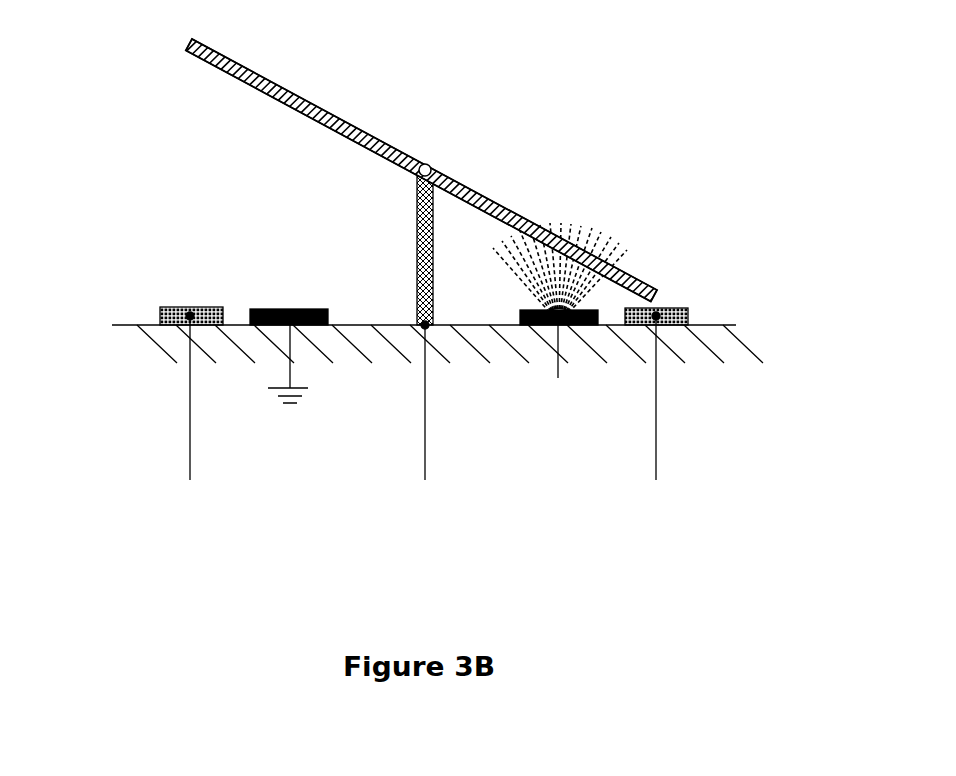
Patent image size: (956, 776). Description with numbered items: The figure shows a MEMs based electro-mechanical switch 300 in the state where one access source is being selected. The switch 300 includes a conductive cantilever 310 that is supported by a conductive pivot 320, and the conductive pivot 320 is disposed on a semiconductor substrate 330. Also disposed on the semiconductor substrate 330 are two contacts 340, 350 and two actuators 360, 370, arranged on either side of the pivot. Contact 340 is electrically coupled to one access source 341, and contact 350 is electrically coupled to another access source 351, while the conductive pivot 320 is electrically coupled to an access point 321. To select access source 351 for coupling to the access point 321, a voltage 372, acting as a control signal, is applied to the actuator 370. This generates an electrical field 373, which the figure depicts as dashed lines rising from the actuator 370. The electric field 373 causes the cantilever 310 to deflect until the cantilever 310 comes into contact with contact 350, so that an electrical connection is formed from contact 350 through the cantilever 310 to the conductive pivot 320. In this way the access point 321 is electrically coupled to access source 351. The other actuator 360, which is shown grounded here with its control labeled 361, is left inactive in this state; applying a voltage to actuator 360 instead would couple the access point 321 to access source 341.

The MEMs based electro-mechanical switch 300 is at (547, 140).
The conductive cantilever 310 is at (362, 127).
The conductive pivot 320 is at (417, 248).
The access point 321 is at (440, 547).
The semiconductor substrate 330 is at (145, 343).
The contact 340 is at (183, 308).
The access source 341 is at (137, 517).
The contact 350 is at (665, 308).
The access source 351 is at (703, 510).
The actuator 360 is at (307, 308).
The control B connection (ground) 361 is at (255, 433).
The actuator 370 is at (533, 307).
The voltage 372 is at (592, 433).
The electrical field 373 is at (603, 232).